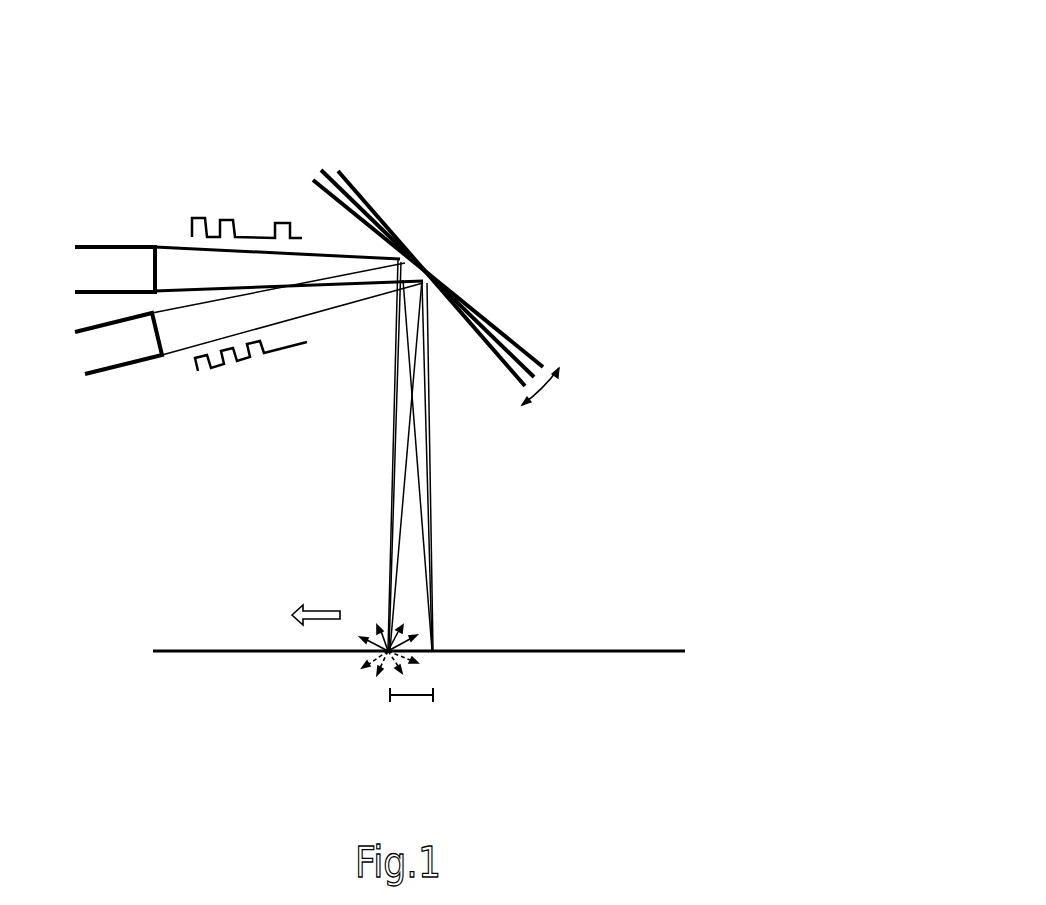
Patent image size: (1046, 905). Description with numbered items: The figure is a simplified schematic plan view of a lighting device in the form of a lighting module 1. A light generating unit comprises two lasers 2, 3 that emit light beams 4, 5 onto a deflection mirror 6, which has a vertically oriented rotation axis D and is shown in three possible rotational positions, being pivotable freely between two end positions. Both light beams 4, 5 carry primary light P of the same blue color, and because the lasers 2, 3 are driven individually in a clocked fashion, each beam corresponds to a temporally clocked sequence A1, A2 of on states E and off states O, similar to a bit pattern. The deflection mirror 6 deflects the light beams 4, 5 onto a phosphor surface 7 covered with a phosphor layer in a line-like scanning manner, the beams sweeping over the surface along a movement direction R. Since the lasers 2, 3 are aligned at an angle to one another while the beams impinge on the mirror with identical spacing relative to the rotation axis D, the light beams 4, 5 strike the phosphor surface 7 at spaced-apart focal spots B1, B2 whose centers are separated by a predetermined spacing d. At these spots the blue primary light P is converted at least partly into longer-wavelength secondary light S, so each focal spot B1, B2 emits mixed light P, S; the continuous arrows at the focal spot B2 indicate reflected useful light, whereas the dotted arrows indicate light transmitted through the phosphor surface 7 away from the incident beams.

The lighting module 1 is at (612, 113).
The laser 2 is at (100, 262).
The laser 3 is at (120, 353).
The light beam 4 is at (222, 193).
The light beam 5 is at (231, 402).
The deflection mirror 6 is at (523, 345).
The phosphor surface 7 is at (653, 650).
The rotation axis D is at (428, 268).
The temporally clocked sequence A1 is at (200, 210).
The temporally clocked sequence A2 is at (212, 373).
The on state E is at (228, 203).
The off state O is at (257, 203).
The movement direction R is at (318, 607).
The primary light P is at (377, 619).
The secondary light S is at (380, 643).
The focal spot B1 is at (437, 660).
The focal spot B2 is at (352, 670).
The spacing d is at (410, 700).